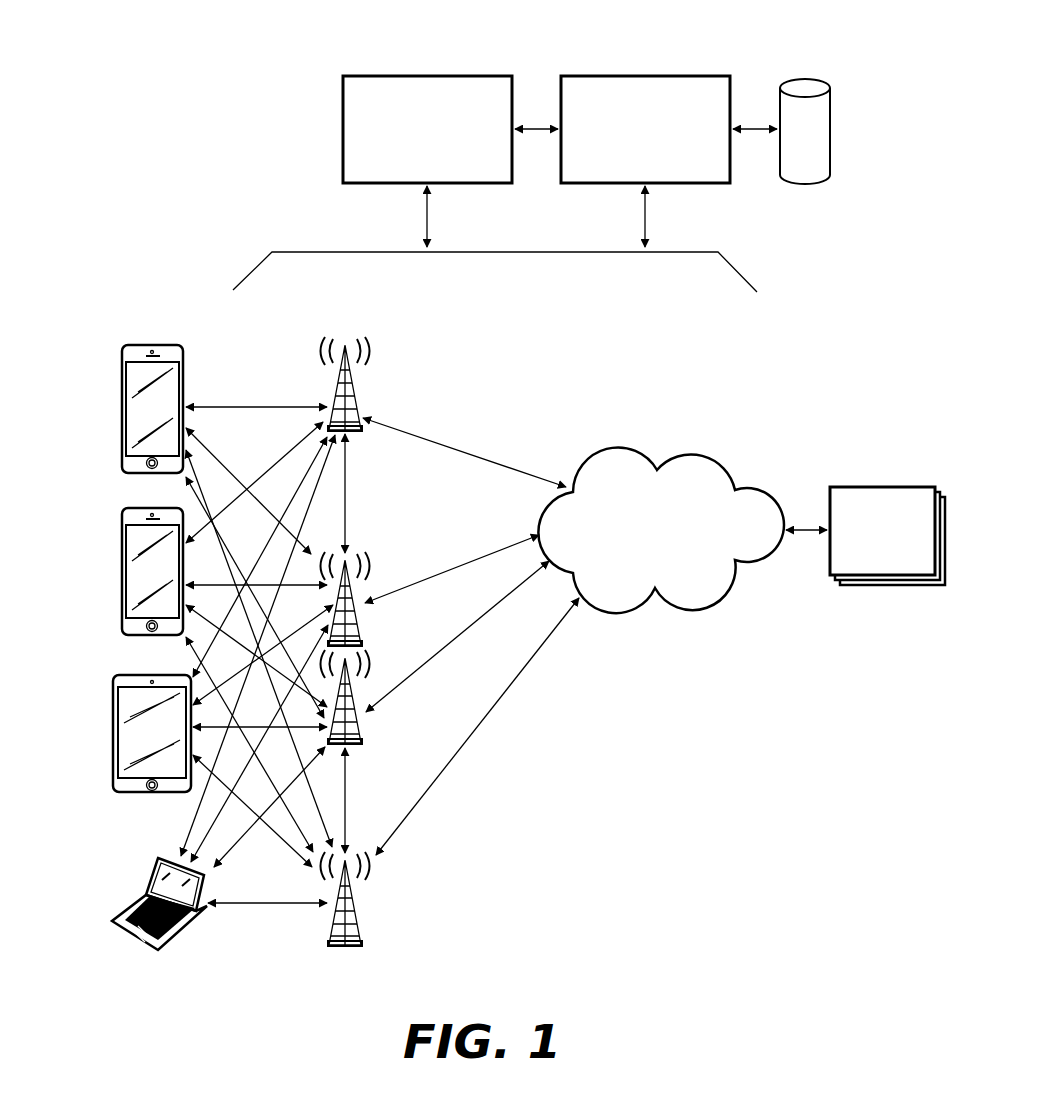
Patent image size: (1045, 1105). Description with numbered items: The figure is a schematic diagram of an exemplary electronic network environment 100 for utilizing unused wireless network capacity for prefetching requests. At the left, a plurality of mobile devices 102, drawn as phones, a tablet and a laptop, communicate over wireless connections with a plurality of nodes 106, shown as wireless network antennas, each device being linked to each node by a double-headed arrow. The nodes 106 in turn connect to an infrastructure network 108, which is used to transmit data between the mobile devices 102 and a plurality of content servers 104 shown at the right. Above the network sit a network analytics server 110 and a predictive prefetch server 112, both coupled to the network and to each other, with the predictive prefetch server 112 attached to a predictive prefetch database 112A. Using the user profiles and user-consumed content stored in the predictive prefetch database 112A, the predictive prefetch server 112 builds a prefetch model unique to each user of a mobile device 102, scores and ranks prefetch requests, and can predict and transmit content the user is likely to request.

The electronic network environment 100 is at (217, 120).
The mobile devices 102 is at (112, 920).
The content servers 104 is at (884, 586).
The nodes 106 is at (345, 641).
The infrastructure network 108 is at (680, 613).
The network analytics server 110 is at (434, 73).
The predictive prefetch server 112 is at (652, 73).
The predictive prefetch database 112A is at (805, 185).